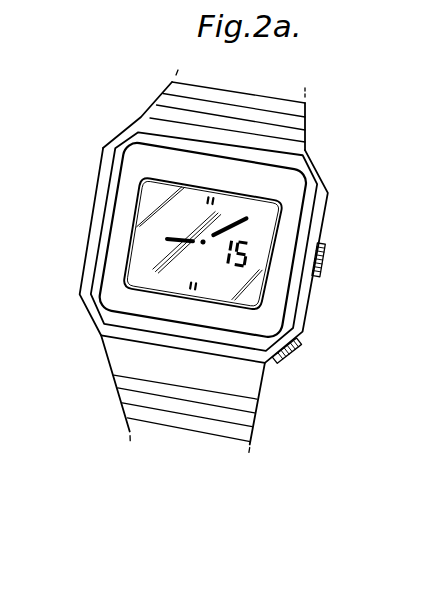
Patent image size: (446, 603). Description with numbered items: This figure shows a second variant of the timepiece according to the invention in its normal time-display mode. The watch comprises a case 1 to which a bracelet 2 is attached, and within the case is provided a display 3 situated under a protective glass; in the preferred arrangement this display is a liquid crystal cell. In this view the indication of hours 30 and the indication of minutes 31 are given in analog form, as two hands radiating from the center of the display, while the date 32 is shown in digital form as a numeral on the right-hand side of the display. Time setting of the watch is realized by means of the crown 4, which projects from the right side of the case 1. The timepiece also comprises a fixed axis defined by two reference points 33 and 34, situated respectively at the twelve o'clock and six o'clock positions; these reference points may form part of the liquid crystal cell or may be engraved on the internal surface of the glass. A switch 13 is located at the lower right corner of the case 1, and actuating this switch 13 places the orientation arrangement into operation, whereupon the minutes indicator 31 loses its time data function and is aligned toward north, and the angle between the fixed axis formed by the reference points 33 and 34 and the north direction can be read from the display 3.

The case 1 is at (323, 198).
The bracelet 2 is at (306, 137).
The display 3 is at (244, 280).
The crown 4 is at (325, 258).
The switch 13 is at (296, 354).
The hours indication 30 is at (168, 239).
The minutes indicator 31 is at (234, 220).
The date 32 is at (254, 248).
The reference point 33 is at (205, 203).
The reference point 34 is at (193, 283).